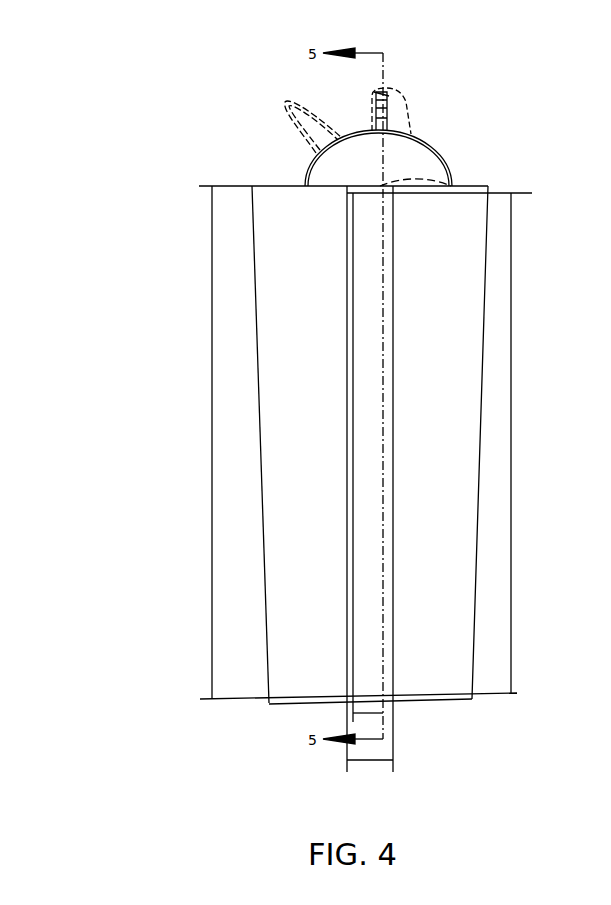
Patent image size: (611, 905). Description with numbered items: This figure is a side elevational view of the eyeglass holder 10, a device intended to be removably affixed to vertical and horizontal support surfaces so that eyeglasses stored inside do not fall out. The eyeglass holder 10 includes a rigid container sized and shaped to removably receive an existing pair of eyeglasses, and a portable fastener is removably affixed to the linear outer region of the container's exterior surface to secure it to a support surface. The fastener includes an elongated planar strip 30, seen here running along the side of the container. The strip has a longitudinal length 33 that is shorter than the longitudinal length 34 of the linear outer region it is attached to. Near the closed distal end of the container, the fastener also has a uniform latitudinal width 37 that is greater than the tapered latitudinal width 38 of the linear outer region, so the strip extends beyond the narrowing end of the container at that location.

The eyeglass holder 10 is at (237, 148).
The elongated planar strip 30 is at (355, 301).
The longitudinal length 33 is at (512, 293).
The longitudinal length 34 is at (212, 378).
The uniform latitudinal width 37 is at (369, 762).
The tapered latitudinal width 38 is at (367, 713).